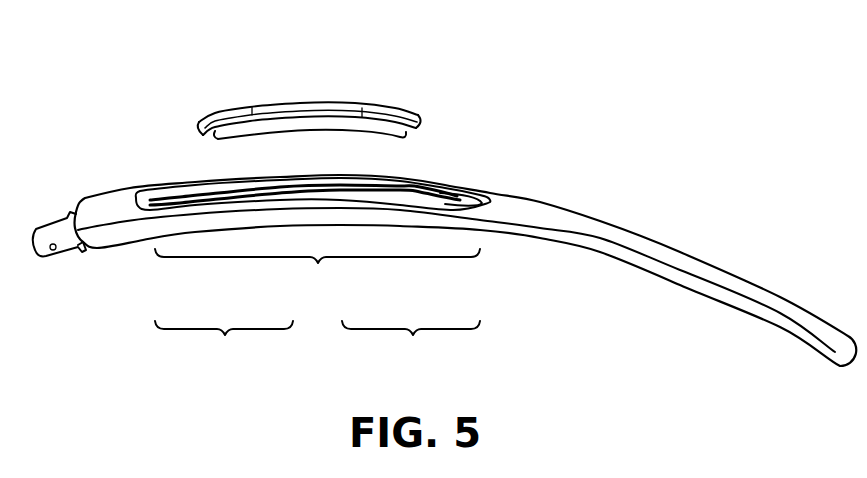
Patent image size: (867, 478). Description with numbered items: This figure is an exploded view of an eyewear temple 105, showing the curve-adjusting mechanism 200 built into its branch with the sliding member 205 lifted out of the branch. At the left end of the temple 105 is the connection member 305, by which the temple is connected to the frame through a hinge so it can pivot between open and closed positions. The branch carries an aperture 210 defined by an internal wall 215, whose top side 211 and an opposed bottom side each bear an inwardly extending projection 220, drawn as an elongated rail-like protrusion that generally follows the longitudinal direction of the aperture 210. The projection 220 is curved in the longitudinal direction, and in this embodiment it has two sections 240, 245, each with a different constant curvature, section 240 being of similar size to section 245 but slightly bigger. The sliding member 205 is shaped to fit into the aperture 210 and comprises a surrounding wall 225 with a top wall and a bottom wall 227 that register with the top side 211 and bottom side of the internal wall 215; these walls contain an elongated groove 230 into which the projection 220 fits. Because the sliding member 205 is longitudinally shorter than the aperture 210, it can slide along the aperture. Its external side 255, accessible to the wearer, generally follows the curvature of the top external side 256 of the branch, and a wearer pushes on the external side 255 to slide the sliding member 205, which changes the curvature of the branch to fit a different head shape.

The temple 105 is at (687, 280).
The adjusting mechanism 200 is at (317, 277).
The sliding member 205 is at (317, 107).
The aperture 210 is at (233, 193).
The top side 211 is at (452, 195).
The internal wall 215 is at (440, 193).
The projection 220 is at (320, 188).
The surrounding wall 225 is at (397, 127).
The bottom wall 227 is at (380, 127).
The elongated groove 230 is at (283, 127).
The section 240 is at (224, 349).
The section 245 is at (411, 349).
The external side 255 is at (222, 112).
The top external side 256 is at (645, 250).
The connection member 305 is at (57, 258).